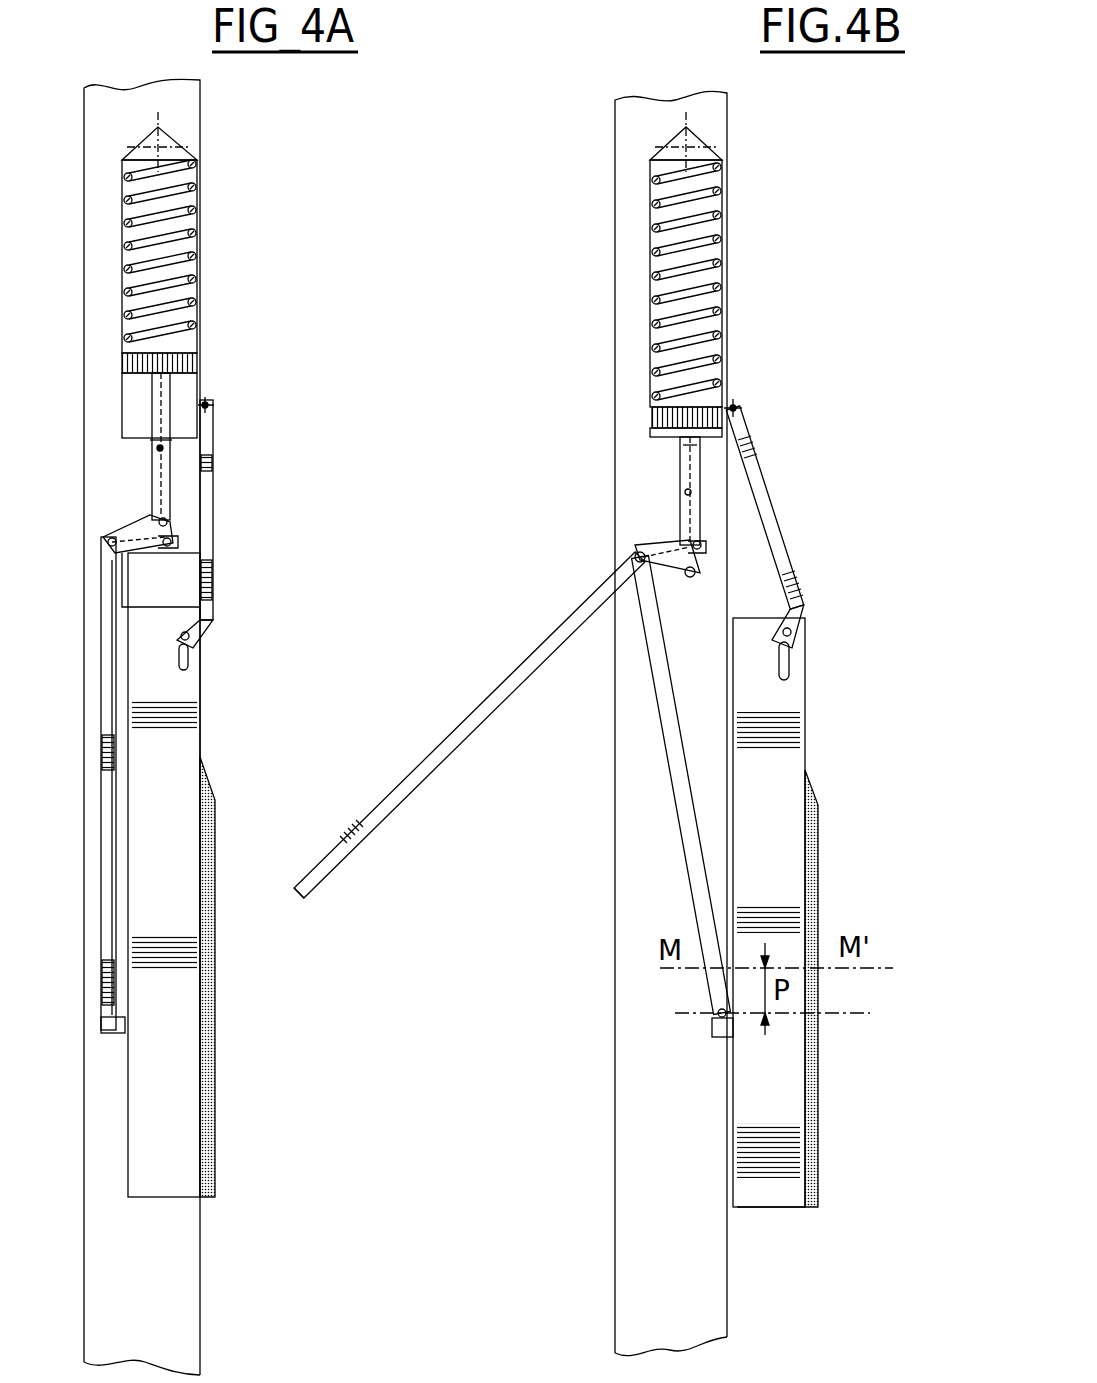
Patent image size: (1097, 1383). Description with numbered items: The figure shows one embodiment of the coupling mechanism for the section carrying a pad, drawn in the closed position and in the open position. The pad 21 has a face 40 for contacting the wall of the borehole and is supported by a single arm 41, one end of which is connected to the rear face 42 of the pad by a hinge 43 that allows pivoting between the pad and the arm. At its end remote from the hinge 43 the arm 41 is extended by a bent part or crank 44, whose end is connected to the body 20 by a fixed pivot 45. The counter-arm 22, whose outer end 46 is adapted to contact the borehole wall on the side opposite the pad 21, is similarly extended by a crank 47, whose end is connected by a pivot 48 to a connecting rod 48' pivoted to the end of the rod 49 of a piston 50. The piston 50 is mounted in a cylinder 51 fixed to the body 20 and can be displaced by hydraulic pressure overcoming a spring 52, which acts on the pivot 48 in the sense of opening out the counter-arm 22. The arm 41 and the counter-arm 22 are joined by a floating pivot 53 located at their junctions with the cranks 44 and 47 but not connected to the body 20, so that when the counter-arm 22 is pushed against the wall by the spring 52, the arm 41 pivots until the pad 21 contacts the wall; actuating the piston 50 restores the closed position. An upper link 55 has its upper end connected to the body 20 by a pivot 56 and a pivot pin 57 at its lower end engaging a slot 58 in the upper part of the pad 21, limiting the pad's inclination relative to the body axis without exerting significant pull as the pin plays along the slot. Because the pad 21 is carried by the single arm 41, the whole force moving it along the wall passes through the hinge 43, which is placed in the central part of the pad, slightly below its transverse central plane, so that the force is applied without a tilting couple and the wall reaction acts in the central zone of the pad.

In FIG. 4A, the body 20 is at (97, 507).
In FIG. 4B, the body 20 is at (620, 760).
In FIG. 4A, the pad 21 is at (175, 757).
In FIG. 4B, the pad 21 is at (785, 705).
In FIG. 4B, the counter-arm 22 is at (410, 785).
In FIG. 4B, the face of the pad 40 is at (817, 840).
In FIG. 4B, the arm 41 is at (692, 900).
In FIG. 4B, the rear face of the pad 42 is at (735, 1148).
In FIG. 4B, the hinge 43 is at (720, 1013).
In FIG. 4A, the crank 44 is at (153, 548).
In FIG. 4B, the crank 44 is at (633, 545).
In FIG. 4A, the fixed pivot 45 is at (167, 542).
In FIG. 4B, the fixed pivot 45 is at (700, 545).
In FIG. 4B, the outer end of the counter-arm 46 is at (305, 897).
In FIG. 4A, the crank 47 is at (137, 523).
In FIG. 4B, the crank 47 is at (670, 573).
In FIG. 4A, the pivot 48 is at (220, 533).
In FIG. 4B, the pivot 48 is at (728, 589).
In FIG. 4A, the connecting rod 48' is at (103, 411).
In FIG. 4B, the rod of the piston 49 is at (690, 460).
In FIG. 4B, the piston 50 is at (653, 417).
In FIG. 4B, the cylinder 51 is at (722, 255).
In FIG. 4B, the spring 52 is at (722, 283).
In FIG. 4A, the floating pivot 53 is at (110, 545).
In FIG. 4B, the floating pivot 53 is at (638, 557).
In FIG. 4B, the upper link 55 is at (793, 548).
In FIG. 4B, the pivot 56 is at (736, 407).
In FIG. 4B, the pivot pin 57 is at (810, 618).
In FIG. 4B, the slot 58 is at (787, 663).